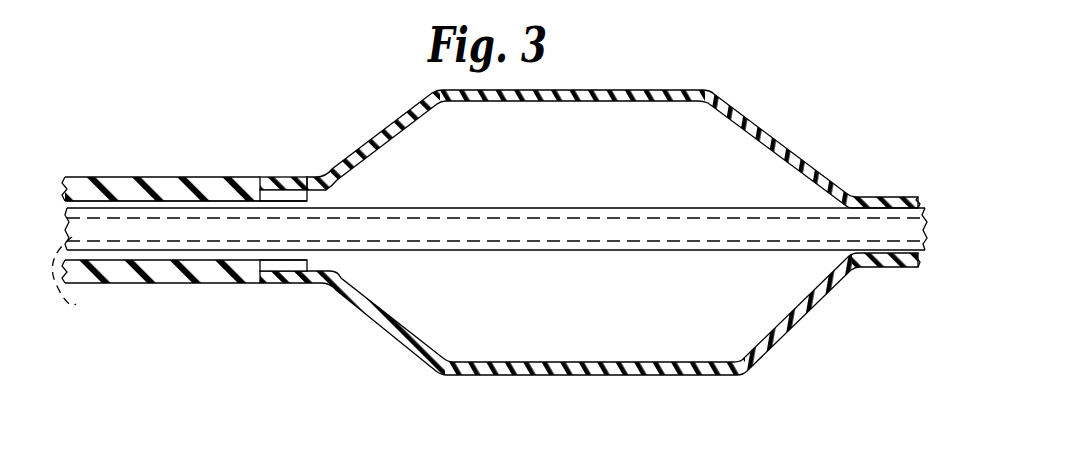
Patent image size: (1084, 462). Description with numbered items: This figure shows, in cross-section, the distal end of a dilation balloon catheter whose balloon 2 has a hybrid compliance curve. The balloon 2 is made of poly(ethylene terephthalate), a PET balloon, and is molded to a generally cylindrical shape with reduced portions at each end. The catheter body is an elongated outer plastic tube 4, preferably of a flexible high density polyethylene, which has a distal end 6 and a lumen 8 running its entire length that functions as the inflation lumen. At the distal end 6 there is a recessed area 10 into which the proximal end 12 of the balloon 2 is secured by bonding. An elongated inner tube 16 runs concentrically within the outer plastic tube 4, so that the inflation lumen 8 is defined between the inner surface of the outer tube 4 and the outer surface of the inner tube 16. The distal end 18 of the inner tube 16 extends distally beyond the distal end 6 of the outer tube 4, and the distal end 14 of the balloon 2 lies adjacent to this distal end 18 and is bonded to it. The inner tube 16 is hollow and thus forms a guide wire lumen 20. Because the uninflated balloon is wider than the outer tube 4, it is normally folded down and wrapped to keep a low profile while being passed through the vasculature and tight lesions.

The balloon 2 is at (581, 91).
The elongated outer plastic tube 4 is at (127, 184).
The distal end 6 is at (262, 183).
The lumen 8 is at (185, 195).
The recessed area 10 is at (264, 279).
The proximal end 12 is at (319, 178).
The distal end 14 is at (887, 196).
The elongated inner tube 16 is at (142, 252).
The distal end 18 is at (894, 236).
The guide wire lumen 20 is at (77, 277).